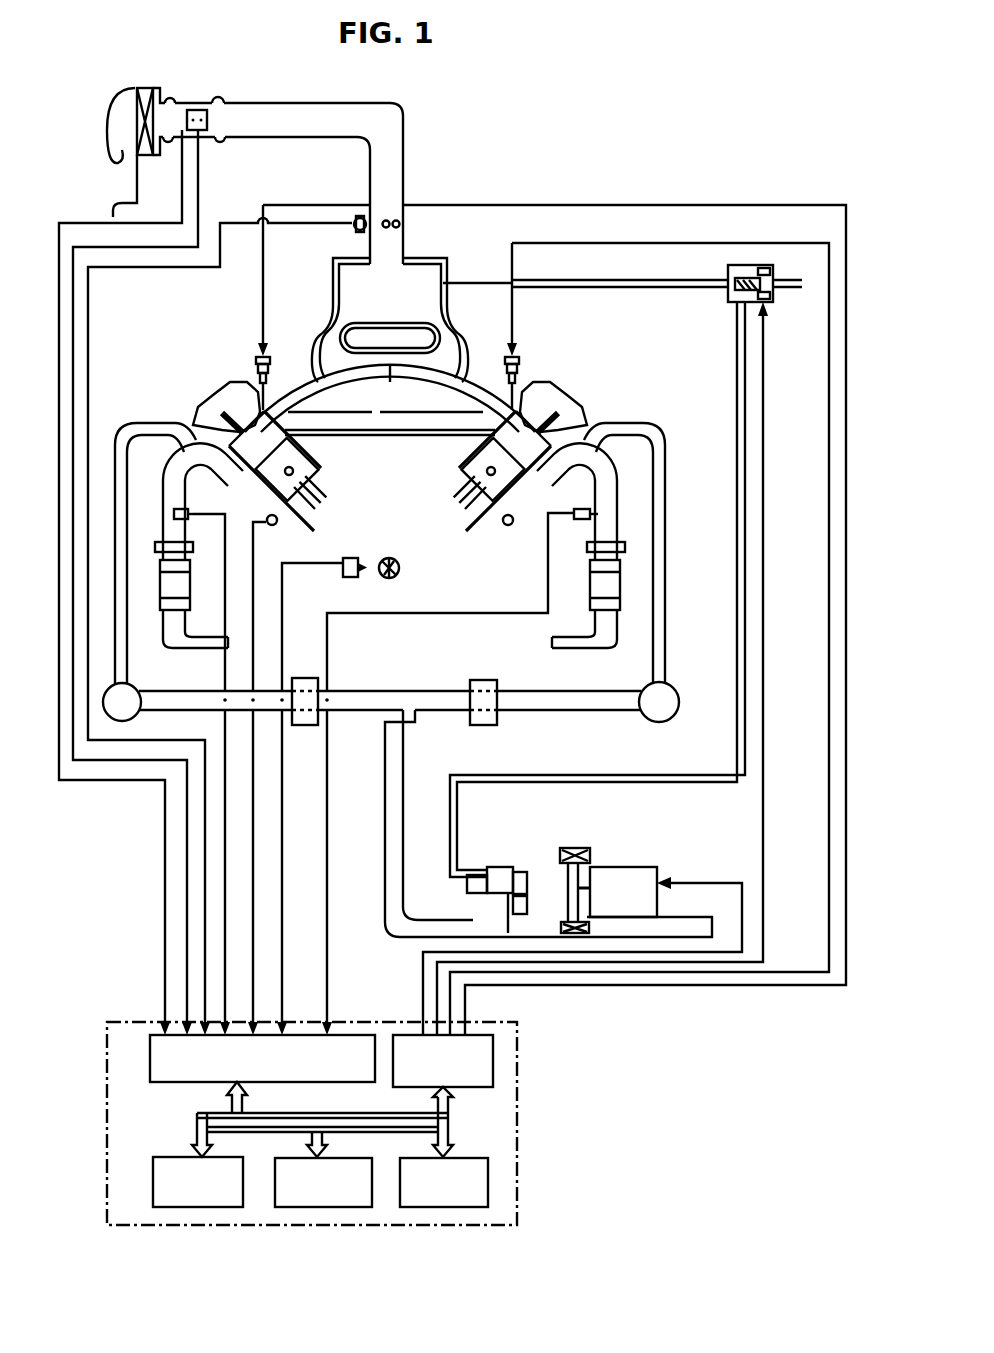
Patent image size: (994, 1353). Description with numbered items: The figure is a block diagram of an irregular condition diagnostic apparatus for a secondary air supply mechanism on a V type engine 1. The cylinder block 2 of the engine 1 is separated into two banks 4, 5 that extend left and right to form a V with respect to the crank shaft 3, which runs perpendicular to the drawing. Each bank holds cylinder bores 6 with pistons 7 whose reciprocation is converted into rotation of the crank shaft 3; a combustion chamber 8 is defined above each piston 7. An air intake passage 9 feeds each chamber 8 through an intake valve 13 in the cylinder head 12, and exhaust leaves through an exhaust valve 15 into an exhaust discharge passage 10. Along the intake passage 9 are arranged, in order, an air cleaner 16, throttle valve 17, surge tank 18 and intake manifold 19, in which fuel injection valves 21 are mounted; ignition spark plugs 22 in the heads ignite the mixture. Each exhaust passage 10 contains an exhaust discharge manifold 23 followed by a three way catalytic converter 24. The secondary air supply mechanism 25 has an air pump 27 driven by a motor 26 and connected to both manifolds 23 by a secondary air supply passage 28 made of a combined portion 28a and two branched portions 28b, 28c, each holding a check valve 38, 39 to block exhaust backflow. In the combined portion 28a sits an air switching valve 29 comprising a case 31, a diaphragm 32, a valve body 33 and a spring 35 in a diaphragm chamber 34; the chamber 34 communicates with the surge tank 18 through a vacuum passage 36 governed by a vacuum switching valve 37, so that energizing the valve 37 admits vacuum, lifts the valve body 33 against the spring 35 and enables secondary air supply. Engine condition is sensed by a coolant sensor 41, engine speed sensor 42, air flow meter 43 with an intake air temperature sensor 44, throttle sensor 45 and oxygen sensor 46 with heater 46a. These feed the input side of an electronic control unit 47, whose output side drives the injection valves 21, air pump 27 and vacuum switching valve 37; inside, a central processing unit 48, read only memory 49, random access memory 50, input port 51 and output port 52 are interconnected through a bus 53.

The V type engine 1 is at (534, 331).
The cylinder block 2 is at (347, 472).
The crank shaft 3 is at (393, 578).
The bank 4 is at (262, 535).
The bank 5 is at (497, 543).
The cylinder bore 6 is at (453, 487).
The piston 7 is at (468, 447).
The combustion chamber 8 is at (513, 522).
The air intake passage 9 is at (405, 149).
The exhaust discharge passage 10 is at (163, 511).
The cylinder head 12 is at (540, 390).
The intake valve 13 is at (487, 393).
The exhaust valve 15 is at (240, 530).
The air cleaner 16 is at (142, 152).
The throttle valve 17 is at (401, 226).
The surge tank 18 is at (340, 289).
The intake manifold 19 is at (390, 368).
The fuel injection valve 21 is at (508, 372).
The ignition spark plug 22 is at (574, 407).
The exhaust discharge manifold 23 is at (666, 452).
The three way catalytic converter 24 is at (613, 594).
The secondary air supply mechanism 25 is at (600, 812).
The motor 26 is at (644, 867).
The air pump 27 is at (590, 867).
The secondary air supply passage 28 is at (555, 641).
The combined portion 28a is at (413, 693).
The branched portion 28b is at (393, 690).
The branched portion 28c is at (465, 683).
The air switching valve 29 is at (553, 862).
The case 31 is at (468, 906).
The diaphragm 32 is at (460, 903).
The valve body 33 is at (510, 888).
The diaphragm chamber 34 is at (500, 868).
The spring 35 is at (503, 868).
The vacuum passage 36 is at (597, 775).
The vacuum switching valve 37 is at (770, 303).
The check valve 38 is at (302, 727).
The check valve 39 is at (488, 727).
The coolant sensor 41 is at (343, 560).
The engine speed sensor 42 is at (348, 578).
The air flow meter 43 is at (183, 102).
The intake air temperature sensor 44 is at (203, 108).
The throttle sensor 45 is at (352, 226).
The oxygen sensor 46 is at (595, 596).
The heater 46a is at (608, 517).
The electronic control unit 47 is at (107, 1051).
The central processing unit 48 is at (178, 1157).
The read only memory 49 is at (485, 1157).
The random access memory 50 is at (353, 1158).
The input port 51 is at (285, 1082).
The output port 52 is at (412, 1087).
The bus 53 is at (206, 1113).